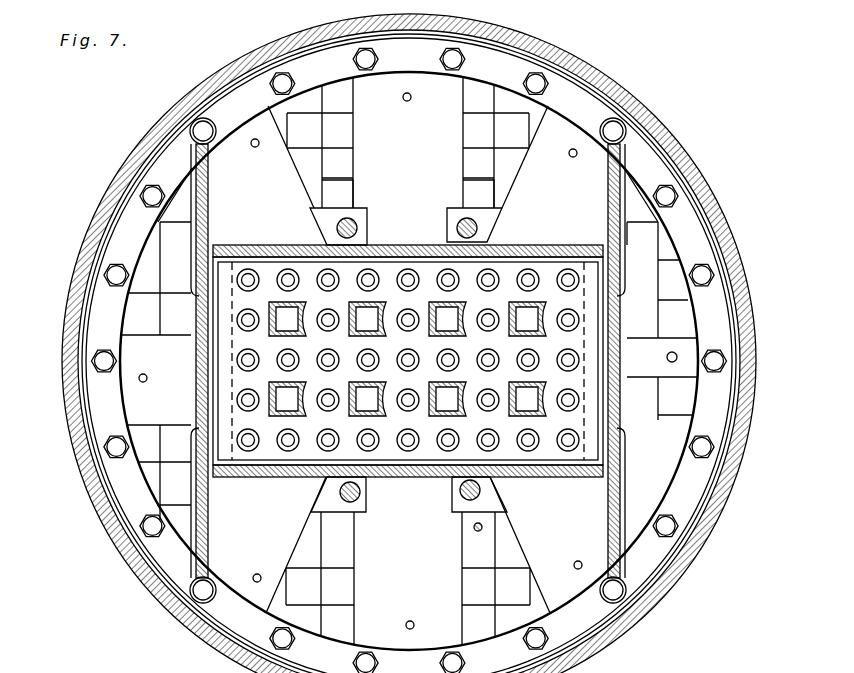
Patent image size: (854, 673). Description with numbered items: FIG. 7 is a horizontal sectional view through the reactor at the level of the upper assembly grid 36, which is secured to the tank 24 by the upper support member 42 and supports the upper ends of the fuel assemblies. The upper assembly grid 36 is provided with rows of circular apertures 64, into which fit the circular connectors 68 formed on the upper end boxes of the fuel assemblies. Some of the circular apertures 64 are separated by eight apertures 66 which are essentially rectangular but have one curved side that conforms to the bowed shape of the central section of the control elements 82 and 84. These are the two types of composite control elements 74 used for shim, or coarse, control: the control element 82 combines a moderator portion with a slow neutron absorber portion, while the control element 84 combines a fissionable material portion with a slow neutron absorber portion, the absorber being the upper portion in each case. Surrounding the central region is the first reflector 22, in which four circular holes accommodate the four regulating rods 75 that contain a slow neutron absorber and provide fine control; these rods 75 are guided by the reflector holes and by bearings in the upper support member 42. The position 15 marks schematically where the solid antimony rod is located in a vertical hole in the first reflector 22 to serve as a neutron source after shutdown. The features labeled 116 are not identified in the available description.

The antimony rod position 15 is at (474, 530).
The first reflector 22 is at (420, 151).
The tank 24 is at (670, 150).
The upper assembly grid 36 is at (270, 452).
The upper support member 42 is at (281, 244).
The circular apertures 64 is at (408, 268).
The apertures 66 is at (540, 278).
The circular connectors 68 is at (238, 438).
The composite control elements 74 is at (398, 480).
The regulating rods 75 is at (458, 222).
The control element 82 is at (515, 303).
The control element 84 is at (357, 416).
The flow holes 116 is at (407, 101).